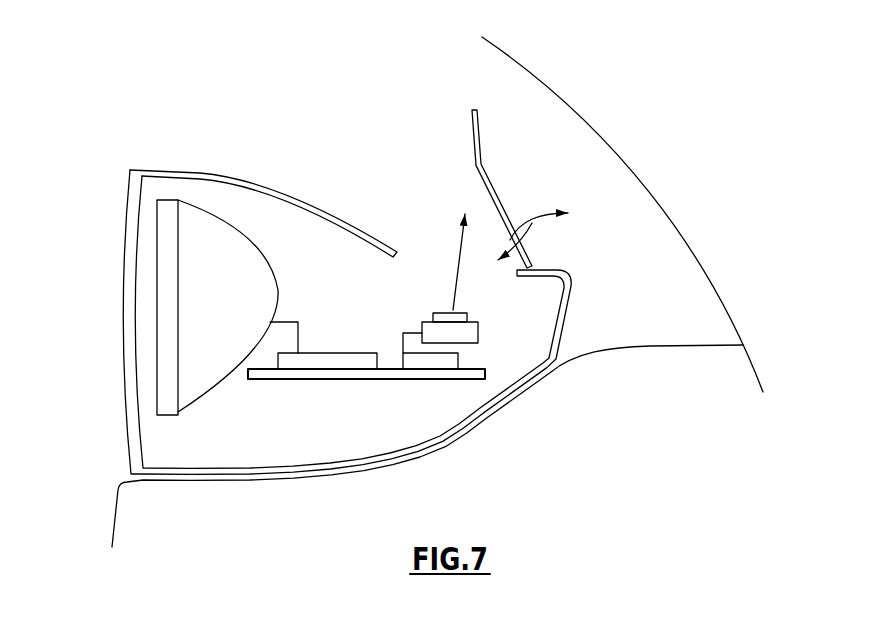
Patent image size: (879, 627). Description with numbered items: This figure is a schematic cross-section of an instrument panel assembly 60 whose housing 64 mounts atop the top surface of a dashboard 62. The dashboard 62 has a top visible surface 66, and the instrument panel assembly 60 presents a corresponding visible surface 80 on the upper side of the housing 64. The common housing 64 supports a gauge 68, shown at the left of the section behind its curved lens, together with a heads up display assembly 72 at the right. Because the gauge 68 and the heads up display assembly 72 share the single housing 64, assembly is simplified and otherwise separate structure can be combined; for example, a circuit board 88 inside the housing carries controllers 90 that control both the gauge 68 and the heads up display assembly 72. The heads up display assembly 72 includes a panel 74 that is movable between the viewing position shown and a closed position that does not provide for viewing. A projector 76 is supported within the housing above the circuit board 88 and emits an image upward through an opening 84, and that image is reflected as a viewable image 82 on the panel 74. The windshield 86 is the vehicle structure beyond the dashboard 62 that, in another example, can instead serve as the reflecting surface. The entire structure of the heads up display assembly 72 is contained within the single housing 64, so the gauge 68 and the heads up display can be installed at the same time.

The instrument panel assembly 60 is at (108, 190).
The dashboard 62 is at (628, 398).
The housing 64 is at (195, 172).
The top visible surface 66 is at (655, 345).
The first gauge 68 is at (147, 336).
The heads up display assembly 72 is at (513, 353).
The panel 74 is at (482, 158).
The projector 76 is at (468, 333).
The visible surface 80 is at (235, 175).
The viewable image 82 is at (460, 148).
The opening 84 is at (428, 242).
The windshield 86 is at (688, 249).
The circuit board 88 is at (352, 372).
The controllers 90 is at (403, 362).